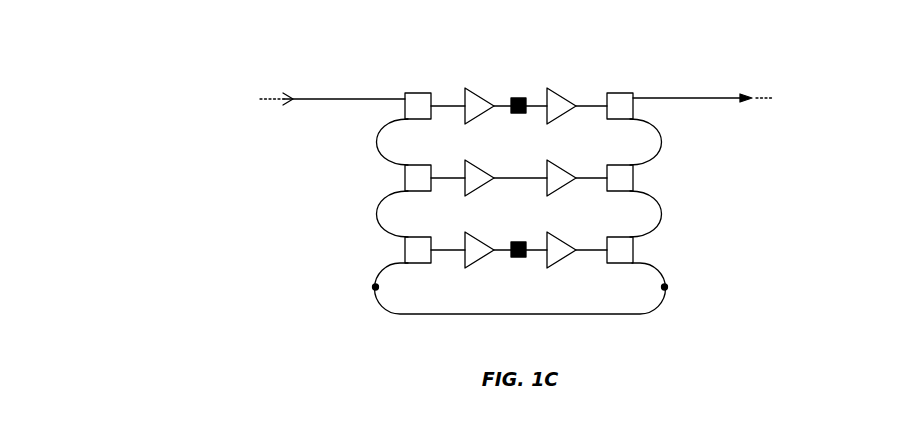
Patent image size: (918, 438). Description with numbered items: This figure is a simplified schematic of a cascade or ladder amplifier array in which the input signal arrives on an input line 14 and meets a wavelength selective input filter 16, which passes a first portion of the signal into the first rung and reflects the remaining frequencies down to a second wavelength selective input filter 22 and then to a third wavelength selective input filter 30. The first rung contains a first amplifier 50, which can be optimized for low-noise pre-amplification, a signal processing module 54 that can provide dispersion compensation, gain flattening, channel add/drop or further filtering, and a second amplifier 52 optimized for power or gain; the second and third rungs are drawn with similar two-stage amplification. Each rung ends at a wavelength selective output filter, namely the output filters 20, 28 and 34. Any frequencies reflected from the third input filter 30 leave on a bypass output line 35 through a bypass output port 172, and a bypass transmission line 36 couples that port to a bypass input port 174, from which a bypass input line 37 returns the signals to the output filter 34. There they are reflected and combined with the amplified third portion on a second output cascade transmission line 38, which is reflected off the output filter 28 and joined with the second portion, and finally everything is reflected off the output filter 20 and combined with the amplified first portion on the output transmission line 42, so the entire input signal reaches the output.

The input optical fiber 14 is at (341, 99).
The wavelength selective input filter 16 is at (418, 93).
The wavelength selective output filter 20 is at (620, 93).
The wavelength selective input filter 22 is at (419, 165).
The wavelength selective output filter 28 is at (619, 165).
The wavelength selective input filter 30 is at (419, 237).
The wavelength selective output filter 34 is at (619, 237).
The bypass output line 35 is at (391, 263).
The bypass transmission line 36 is at (622, 315).
The bypass input line 37 is at (655, 263).
The second output cascade transmission line 38 is at (666, 213).
The output transmission line 42 is at (703, 98).
The first amplifier 50 is at (481, 94).
The second amplifier 52 is at (562, 92).
The signal processing module 54 is at (518, 98).
The bypass output port 172 is at (375, 288).
The bypass input port 174 is at (666, 288).